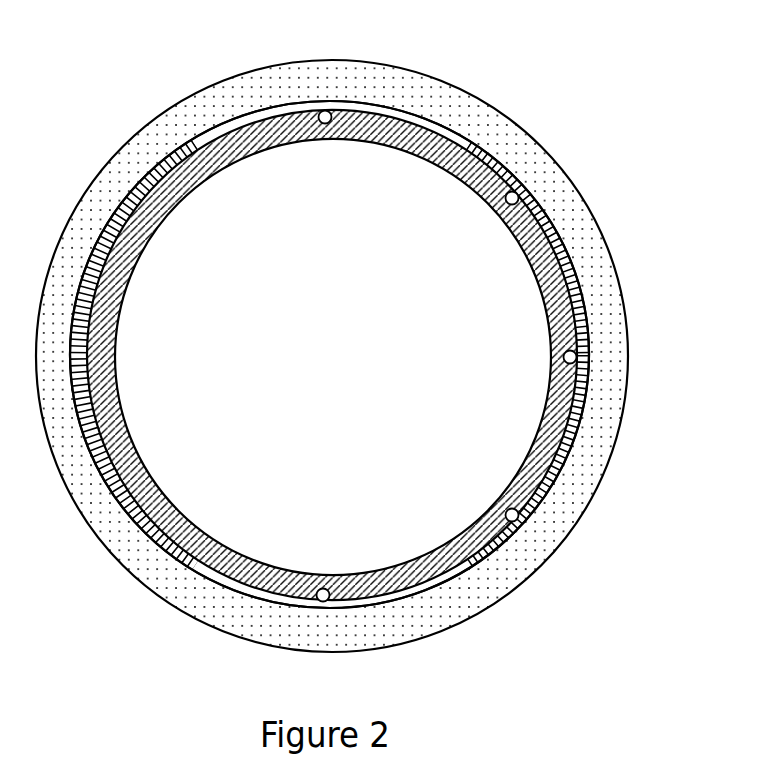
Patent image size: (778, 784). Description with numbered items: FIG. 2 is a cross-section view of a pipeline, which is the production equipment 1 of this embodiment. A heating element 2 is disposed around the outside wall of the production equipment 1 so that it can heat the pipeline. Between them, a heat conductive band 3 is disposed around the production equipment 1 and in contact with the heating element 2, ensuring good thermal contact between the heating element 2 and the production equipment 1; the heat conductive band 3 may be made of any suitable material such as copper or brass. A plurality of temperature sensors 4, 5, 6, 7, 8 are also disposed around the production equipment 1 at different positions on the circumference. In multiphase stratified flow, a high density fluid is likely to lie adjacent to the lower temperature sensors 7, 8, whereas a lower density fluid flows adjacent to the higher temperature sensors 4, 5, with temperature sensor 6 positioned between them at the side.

The production equipment 1 is at (565, 400).
The heating element 2 is at (437, 99).
The heat conductive band 3 is at (540, 216).
The temperature sensor 4 is at (326, 110).
The temperature sensor 5 is at (519, 199).
The temperature sensor 6 is at (577, 358).
The temperature sensor 7 is at (519, 516).
The temperature sensor 8 is at (322, 602).